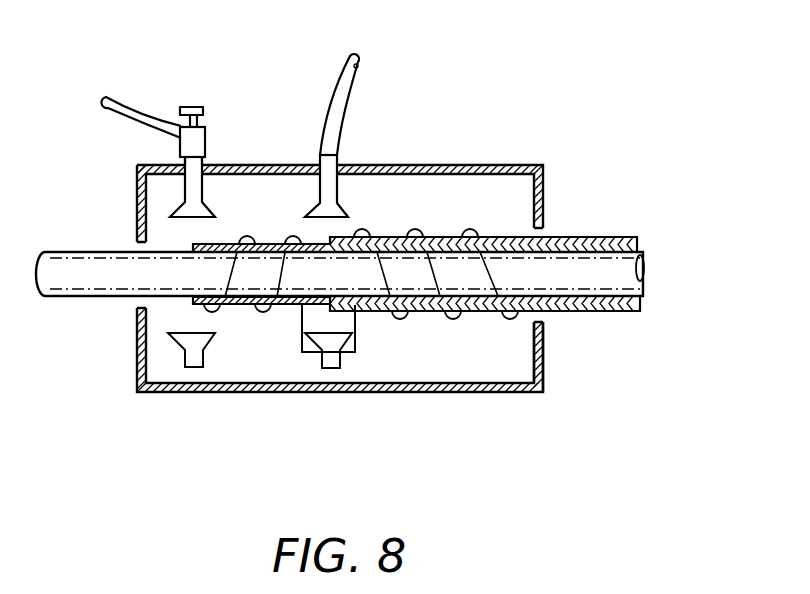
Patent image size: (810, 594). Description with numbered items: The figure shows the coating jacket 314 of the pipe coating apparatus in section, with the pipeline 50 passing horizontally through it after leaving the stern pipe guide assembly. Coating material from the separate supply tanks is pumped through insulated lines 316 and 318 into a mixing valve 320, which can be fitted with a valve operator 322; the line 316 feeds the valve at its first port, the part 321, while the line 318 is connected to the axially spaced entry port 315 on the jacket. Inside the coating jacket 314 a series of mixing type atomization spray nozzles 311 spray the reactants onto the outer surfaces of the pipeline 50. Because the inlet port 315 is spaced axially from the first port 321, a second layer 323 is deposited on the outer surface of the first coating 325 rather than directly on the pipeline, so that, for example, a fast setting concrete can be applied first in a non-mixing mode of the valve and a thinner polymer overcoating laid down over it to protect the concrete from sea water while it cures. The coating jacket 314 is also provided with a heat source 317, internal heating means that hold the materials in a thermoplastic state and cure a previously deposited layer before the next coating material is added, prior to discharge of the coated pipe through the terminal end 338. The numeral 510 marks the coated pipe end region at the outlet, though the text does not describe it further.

The pipeline 50 is at (107, 273).
The mixing type atomization spray nozzles 311 is at (183, 187).
The coating jacket 314 is at (470, 393).
The entry port 315 is at (335, 163).
The line 316 is at (130, 115).
The heat source 317 is at (493, 278).
The line 318 is at (347, 90).
The mixing valve 320 is at (207, 137).
The part 321 is at (185, 163).
The valve operator 322 is at (198, 105).
The second layer 323 is at (610, 234).
The first coating 325 is at (277, 305).
The terminal end 338 is at (543, 363).
The tube end 510 is at (618, 277).